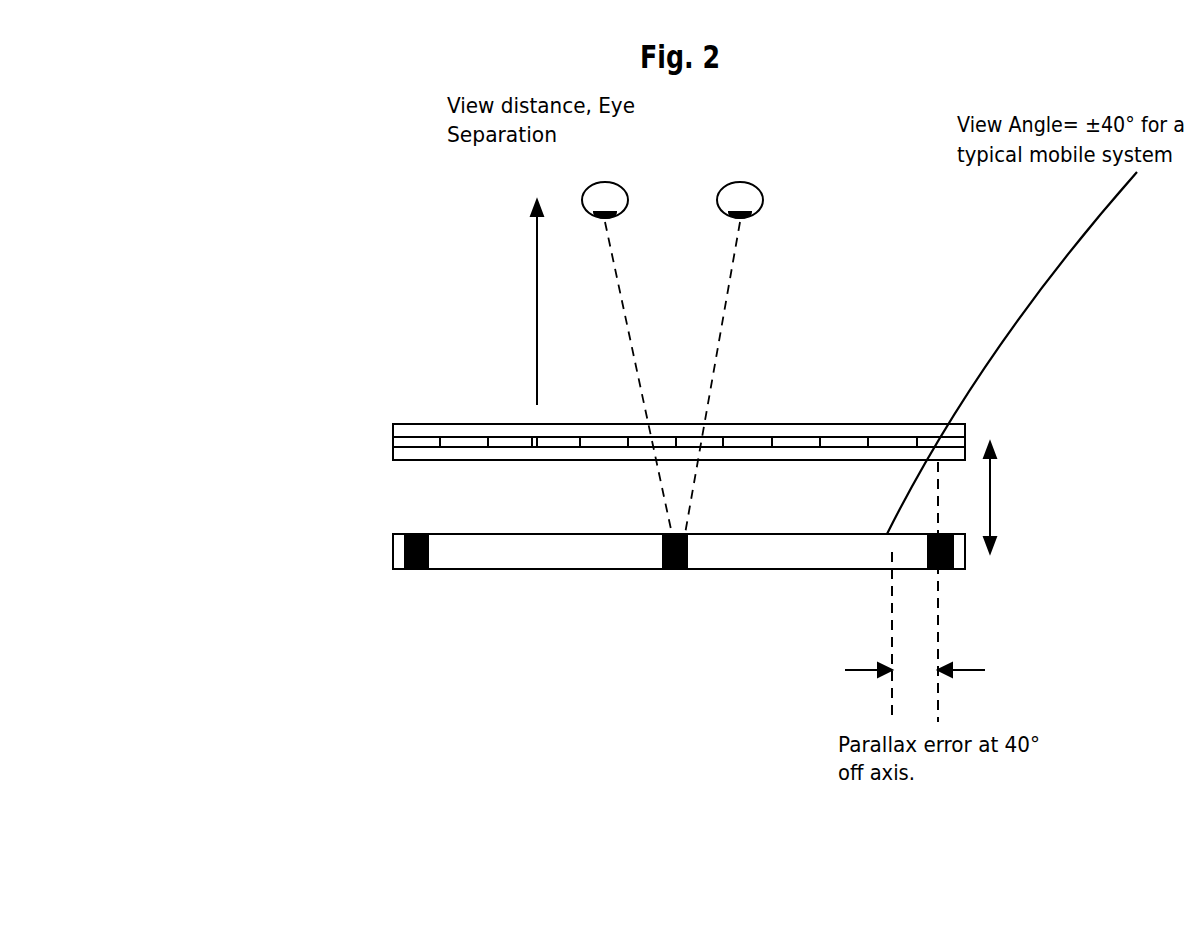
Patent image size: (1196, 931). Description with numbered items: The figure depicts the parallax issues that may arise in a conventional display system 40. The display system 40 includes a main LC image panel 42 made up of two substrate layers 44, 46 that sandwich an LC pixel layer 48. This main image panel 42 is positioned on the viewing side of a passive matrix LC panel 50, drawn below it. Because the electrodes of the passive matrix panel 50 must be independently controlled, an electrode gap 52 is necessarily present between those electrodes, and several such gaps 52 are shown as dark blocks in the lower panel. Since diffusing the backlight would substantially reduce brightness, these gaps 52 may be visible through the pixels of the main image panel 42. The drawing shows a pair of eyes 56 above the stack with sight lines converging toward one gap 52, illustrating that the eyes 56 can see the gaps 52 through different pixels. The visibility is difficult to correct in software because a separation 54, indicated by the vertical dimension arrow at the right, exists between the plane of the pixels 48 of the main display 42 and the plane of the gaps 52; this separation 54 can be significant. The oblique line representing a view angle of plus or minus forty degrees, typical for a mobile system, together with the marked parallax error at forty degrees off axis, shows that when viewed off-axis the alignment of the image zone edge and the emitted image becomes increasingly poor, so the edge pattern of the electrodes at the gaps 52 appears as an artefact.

The display system 40 is at (326, 352).
The main LC image panel 42 is at (475, 408).
The substrate layer 44 is at (393, 462).
The substrate layer 46 is at (393, 430).
The LC pixel layer 48 is at (965, 442).
The passive matrix LC panel 50 is at (393, 563).
The electrode gap 52 is at (657, 570).
The separation 54 is at (1011, 497).
The eyes 56 is at (760, 210).